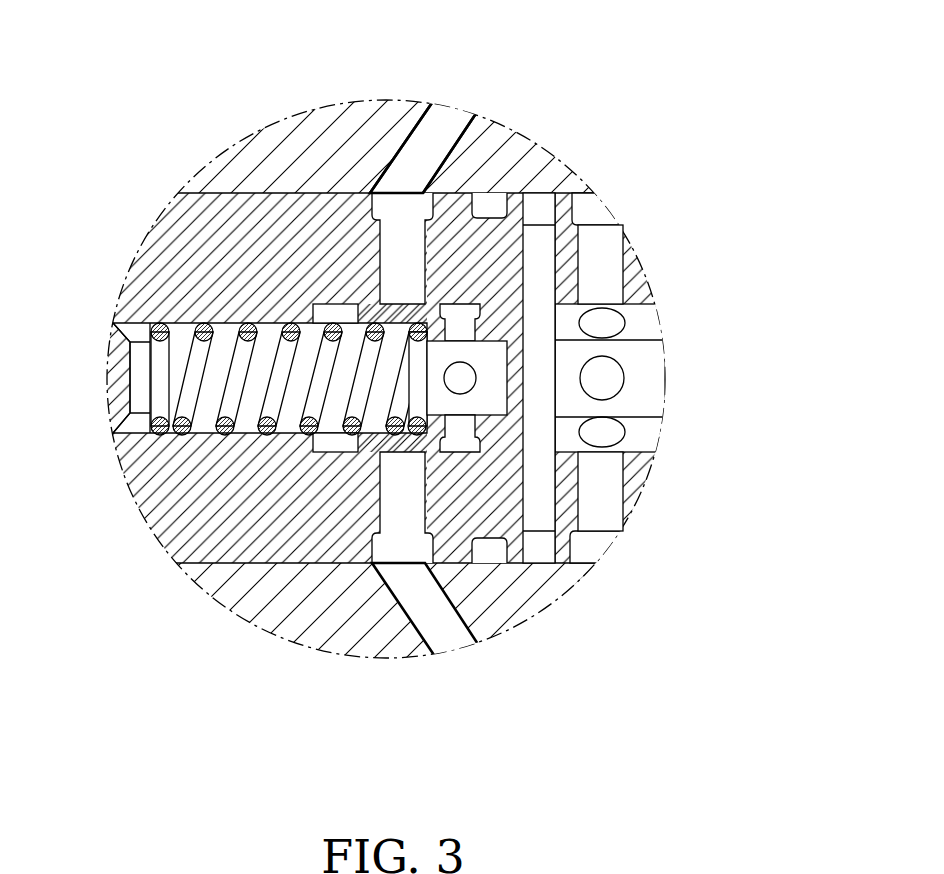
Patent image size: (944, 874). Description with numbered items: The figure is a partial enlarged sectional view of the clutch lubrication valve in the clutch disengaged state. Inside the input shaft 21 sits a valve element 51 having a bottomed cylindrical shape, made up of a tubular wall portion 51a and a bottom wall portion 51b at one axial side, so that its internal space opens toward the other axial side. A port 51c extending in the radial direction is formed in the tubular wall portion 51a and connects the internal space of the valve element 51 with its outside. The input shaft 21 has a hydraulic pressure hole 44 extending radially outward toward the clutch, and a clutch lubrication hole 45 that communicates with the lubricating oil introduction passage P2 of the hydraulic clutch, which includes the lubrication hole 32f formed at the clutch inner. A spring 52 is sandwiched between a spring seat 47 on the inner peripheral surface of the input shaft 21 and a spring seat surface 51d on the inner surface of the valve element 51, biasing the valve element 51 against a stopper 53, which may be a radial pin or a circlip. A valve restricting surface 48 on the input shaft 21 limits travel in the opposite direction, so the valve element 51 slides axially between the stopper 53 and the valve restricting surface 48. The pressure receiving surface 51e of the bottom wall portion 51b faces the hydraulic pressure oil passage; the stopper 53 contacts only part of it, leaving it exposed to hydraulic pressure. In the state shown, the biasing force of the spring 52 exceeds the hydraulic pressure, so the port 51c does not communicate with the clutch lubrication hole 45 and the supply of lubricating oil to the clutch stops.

The input shaft 21 is at (188, 252).
The lubrication hole 32f is at (420, 145).
The hydraulic pressure hole 44 is at (605, 270).
The clutch lubrication hole 45 is at (397, 240).
The spring seat 47 is at (135, 338).
The valve restricting surface 48 is at (305, 310).
The valve element 51 is at (500, 455).
The tubular wall portion 51a is at (397, 455).
The bottom wall portion 51b is at (525, 340).
The port 51c is at (460, 328).
The spring seat surface 51d is at (448, 455).
The pressure receiving surface 51e is at (527, 395).
The spring 52 is at (215, 408).
The stopper 53 is at (540, 482).
The lubricating oil introduction passage P2 is at (455, 123).